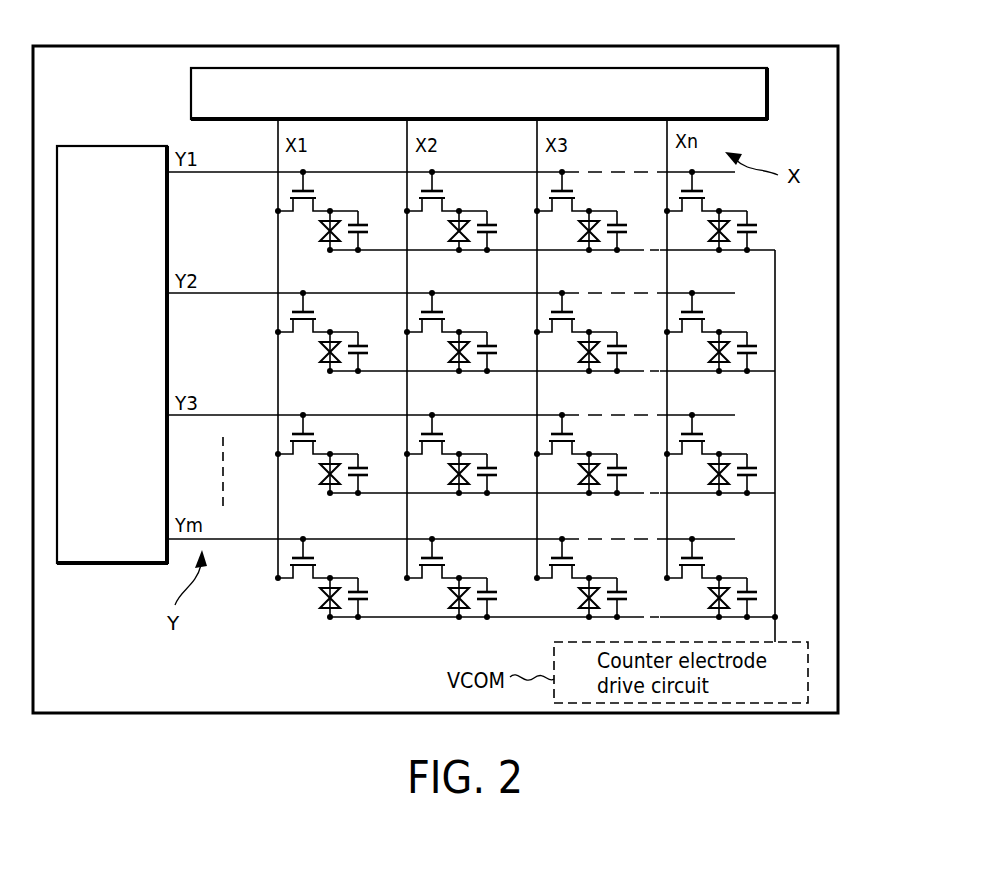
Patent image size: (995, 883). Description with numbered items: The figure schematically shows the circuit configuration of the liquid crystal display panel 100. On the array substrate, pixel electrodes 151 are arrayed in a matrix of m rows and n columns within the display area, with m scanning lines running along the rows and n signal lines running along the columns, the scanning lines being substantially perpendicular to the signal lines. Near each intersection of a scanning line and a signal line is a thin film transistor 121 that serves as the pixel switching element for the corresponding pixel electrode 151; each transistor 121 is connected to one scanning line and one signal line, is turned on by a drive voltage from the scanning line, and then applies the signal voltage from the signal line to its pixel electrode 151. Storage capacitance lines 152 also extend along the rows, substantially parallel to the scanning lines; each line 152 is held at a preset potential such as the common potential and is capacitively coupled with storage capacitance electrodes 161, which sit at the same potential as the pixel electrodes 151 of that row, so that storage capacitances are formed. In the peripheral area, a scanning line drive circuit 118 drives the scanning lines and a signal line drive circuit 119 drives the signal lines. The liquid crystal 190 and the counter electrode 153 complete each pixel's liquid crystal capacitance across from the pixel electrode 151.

The liquid crystal display panel 100 is at (838, 135).
The scanning line drive circuit 118 is at (110, 146).
The signal line drive circuit 119 is at (767, 85).
The thin film transistor 121 is at (464, 192).
The pixel electrode 151 is at (453, 218).
The storage capacitance line 152 is at (513, 252).
The counter electrode 153 is at (462, 246).
The storage capacitance electrode 161 is at (492, 226).
The liquid crystal layer 190 is at (451, 233).